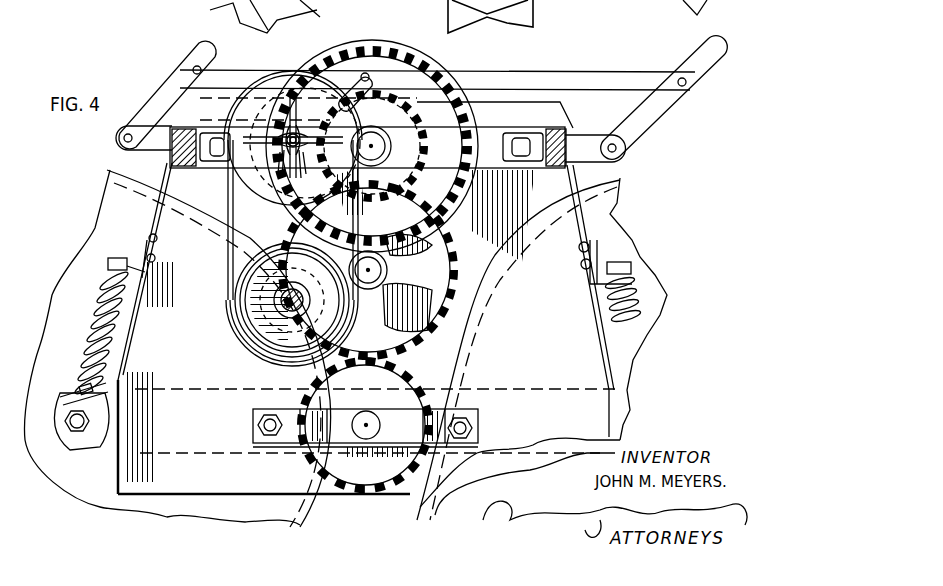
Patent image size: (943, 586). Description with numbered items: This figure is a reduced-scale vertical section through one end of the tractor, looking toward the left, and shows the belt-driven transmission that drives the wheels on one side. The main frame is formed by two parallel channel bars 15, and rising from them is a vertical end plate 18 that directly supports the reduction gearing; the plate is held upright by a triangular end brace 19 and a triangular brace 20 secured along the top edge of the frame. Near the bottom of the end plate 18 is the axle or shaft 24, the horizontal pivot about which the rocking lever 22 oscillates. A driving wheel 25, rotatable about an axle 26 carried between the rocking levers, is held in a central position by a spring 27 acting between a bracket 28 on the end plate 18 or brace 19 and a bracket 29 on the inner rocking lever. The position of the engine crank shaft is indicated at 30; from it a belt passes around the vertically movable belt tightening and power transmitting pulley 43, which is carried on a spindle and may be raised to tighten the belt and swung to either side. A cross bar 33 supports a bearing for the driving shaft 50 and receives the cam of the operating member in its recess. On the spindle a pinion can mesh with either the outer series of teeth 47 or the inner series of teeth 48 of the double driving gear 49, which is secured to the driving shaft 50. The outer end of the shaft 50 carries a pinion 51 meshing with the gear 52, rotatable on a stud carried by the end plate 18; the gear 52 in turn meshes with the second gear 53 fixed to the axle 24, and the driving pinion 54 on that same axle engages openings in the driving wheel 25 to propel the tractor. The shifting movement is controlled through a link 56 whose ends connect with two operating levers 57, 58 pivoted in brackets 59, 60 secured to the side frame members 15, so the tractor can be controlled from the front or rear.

The channel bars 15 is at (194, 126).
The end plate 18 is at (168, 485).
The triangular end brace 19 is at (135, 339).
The triangular brace 20 is at (518, 102).
The rocking lever 22 is at (216, 450).
The axle or shaft 24 is at (346, 497).
The driving wheel 25 is at (296, 522).
The axle 26 is at (77, 445).
The spring 27 is at (75, 322).
The bracket 28 is at (108, 262).
The bracket 29 is at (62, 393).
The crank shaft position 30 is at (293, 282).
The cross bar 33 is at (493, 168).
The belt tightening and power transmitting pulley 43 is at (272, 200).
The outer series of teeth 47 is at (346, 50).
The inner series of teeth 48 is at (410, 118).
The double driving gear 49 is at (430, 55).
The driving shaft 50 is at (420, 138).
The pinion 51 is at (420, 160).
The gear 52 is at (460, 295).
The second gear 53 is at (420, 383).
The driving pinion 54 is at (379, 490).
The link 56 is at (585, 80).
The operating lever 57 is at (172, 92).
The operating lever 58 is at (655, 113).
The bracket 59 is at (158, 144).
The bracket 60 is at (595, 161).